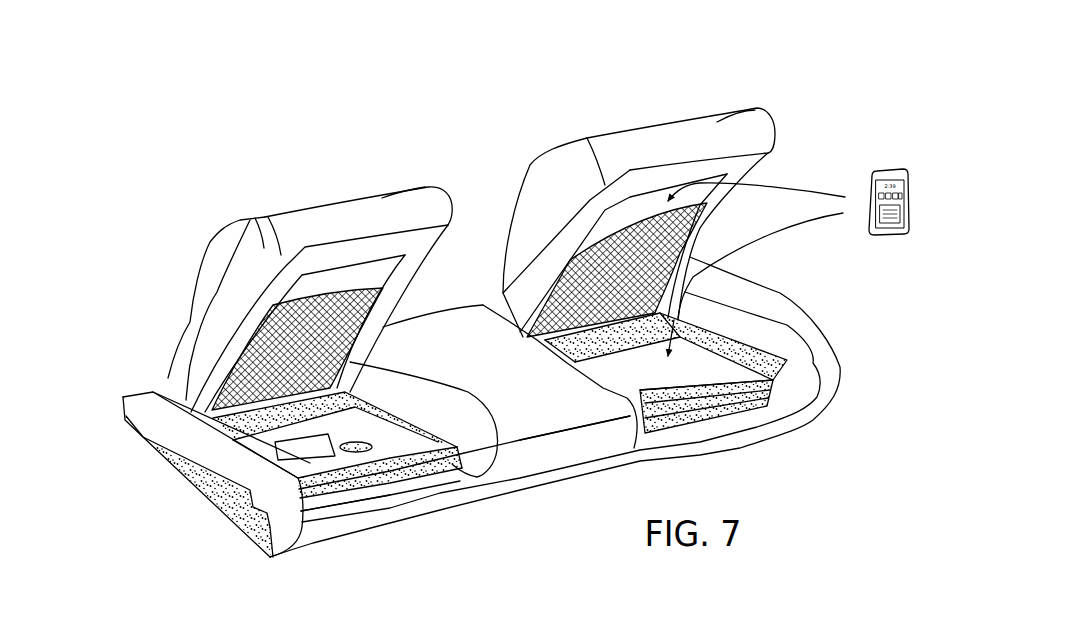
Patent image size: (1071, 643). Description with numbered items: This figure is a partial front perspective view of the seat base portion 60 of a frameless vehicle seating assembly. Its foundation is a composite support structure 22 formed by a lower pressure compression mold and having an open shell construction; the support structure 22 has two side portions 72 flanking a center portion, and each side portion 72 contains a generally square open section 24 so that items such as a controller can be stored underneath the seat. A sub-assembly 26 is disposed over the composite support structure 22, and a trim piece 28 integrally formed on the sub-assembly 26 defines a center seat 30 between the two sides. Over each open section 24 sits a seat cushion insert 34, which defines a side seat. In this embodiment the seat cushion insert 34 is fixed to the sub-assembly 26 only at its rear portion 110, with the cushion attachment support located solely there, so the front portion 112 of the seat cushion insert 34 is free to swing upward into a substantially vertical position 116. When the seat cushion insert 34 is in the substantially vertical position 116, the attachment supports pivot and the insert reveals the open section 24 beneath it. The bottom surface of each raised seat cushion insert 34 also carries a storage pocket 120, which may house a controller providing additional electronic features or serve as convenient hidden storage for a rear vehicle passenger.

The composite support structure 22 is at (430, 473).
The open section 24 is at (353, 392).
The sub-assembly 26 is at (253, 537).
The trim piece 28 is at (560, 413).
The center seat 30 is at (504, 391).
The seat cushion insert 34 is at (263, 245).
The seat base portion 60 is at (856, 307).
The side portion 72 is at (360, 480).
The rear portion 110 is at (177, 373).
The front portion 112 is at (395, 210).
The substantially vertical position 116 is at (180, 260).
The storage pocket 120 is at (237, 385).